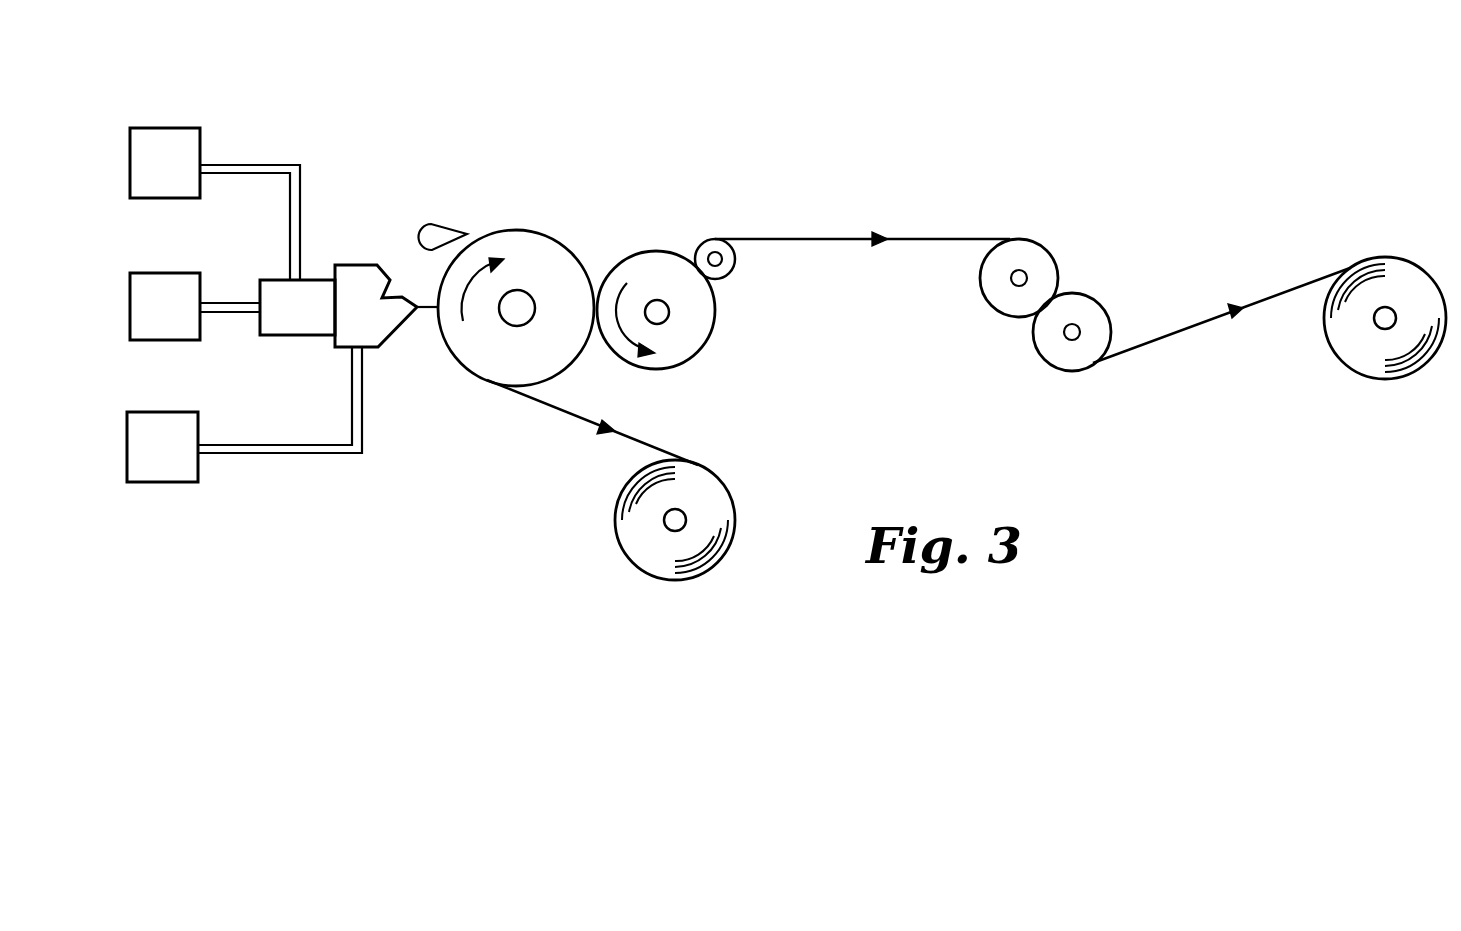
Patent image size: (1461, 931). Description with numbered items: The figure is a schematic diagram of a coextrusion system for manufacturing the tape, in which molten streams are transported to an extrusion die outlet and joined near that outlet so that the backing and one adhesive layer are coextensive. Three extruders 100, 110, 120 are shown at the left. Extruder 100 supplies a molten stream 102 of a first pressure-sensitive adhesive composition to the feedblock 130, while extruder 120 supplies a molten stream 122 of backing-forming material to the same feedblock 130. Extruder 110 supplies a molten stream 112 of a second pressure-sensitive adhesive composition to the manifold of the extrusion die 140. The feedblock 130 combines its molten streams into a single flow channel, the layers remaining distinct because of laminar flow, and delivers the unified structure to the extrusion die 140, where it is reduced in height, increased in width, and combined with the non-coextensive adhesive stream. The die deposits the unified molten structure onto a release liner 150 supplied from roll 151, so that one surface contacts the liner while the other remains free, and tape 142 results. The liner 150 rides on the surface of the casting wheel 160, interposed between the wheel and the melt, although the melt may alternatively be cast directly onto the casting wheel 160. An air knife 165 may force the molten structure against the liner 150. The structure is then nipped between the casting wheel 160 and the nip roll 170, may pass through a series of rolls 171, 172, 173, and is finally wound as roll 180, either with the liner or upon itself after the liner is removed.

The extruder 100 is at (160, 128).
The molten stream 102 is at (245, 164).
The extruder 110 is at (155, 412).
The molten stream 112 is at (245, 445).
The extruder 120 is at (160, 273).
The molten stream 122 is at (232, 303).
The feedblock 130 is at (315, 280).
The extrusion die 140 is at (396, 333).
The tape 142 is at (808, 237).
The release liner 150 is at (545, 402).
The roll 151 is at (645, 545).
The casting wheel 160 is at (530, 243).
The air knife 165 is at (440, 236).
The nip roll 170 is at (648, 262).
The roll 171 is at (725, 268).
The roll 172 is at (1031, 253).
The roll 173 is at (1091, 311).
The roll 180 is at (1422, 285).